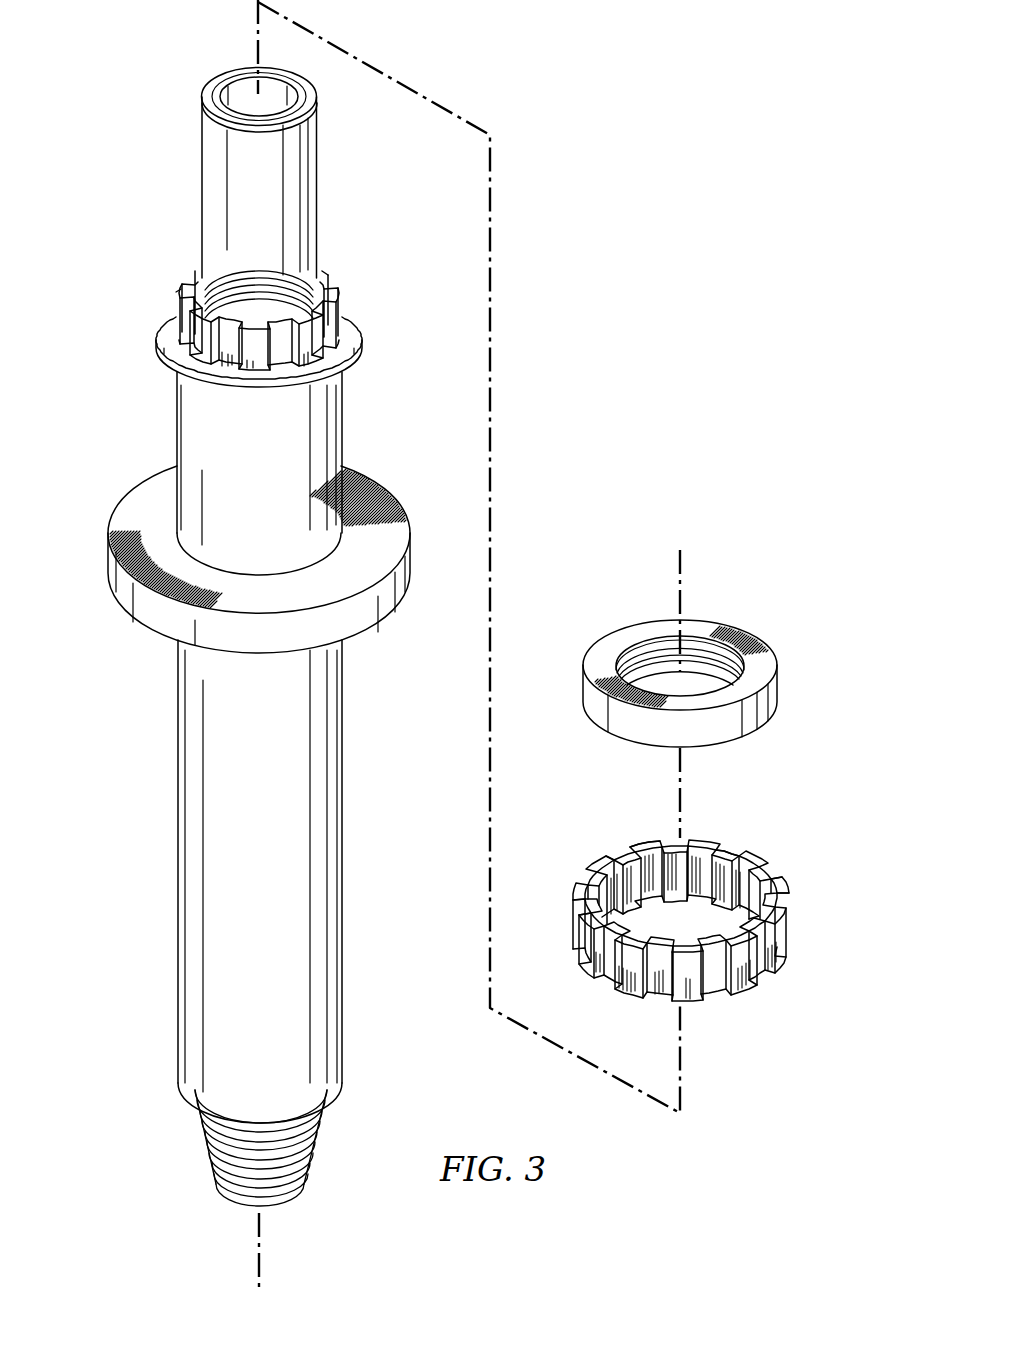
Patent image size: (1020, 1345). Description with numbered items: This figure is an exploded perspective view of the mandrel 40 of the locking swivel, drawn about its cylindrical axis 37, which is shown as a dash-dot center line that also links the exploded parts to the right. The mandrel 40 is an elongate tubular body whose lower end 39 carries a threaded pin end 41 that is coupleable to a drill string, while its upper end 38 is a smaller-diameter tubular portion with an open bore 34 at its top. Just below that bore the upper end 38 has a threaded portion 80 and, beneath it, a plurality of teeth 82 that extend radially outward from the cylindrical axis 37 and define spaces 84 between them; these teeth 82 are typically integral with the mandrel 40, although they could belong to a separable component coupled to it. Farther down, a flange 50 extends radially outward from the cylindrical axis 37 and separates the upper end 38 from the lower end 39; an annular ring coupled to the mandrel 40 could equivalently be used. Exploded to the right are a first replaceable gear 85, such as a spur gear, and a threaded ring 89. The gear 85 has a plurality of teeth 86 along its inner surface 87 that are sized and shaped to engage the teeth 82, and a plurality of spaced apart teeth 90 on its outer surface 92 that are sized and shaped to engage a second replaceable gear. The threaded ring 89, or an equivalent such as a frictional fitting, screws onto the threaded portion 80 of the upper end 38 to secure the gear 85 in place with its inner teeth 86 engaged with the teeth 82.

The bore 34 is at (258, 80).
The cylindrical axis 37 is at (259, 1274).
The upper end 38 is at (202, 165).
The lower end 39 is at (178, 861).
The mandrel 40 is at (396, 416).
The threaded pin end 41 is at (205, 1152).
The flange 50 is at (109, 551).
The threaded portion 80 is at (252, 299).
The teeth 82 is at (186, 272).
The spaces 84 is at (176, 286).
The first replaceable gear 85 is at (678, 912).
The teeth 86 is at (613, 872).
The inner surface 87 is at (655, 942).
The threaded ring 89 is at (633, 633).
The teeth 90 is at (727, 847).
The outer surface 92 is at (607, 972).